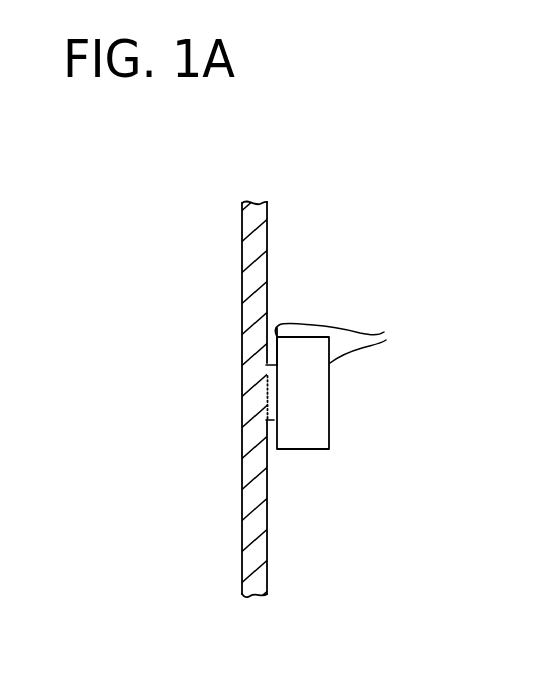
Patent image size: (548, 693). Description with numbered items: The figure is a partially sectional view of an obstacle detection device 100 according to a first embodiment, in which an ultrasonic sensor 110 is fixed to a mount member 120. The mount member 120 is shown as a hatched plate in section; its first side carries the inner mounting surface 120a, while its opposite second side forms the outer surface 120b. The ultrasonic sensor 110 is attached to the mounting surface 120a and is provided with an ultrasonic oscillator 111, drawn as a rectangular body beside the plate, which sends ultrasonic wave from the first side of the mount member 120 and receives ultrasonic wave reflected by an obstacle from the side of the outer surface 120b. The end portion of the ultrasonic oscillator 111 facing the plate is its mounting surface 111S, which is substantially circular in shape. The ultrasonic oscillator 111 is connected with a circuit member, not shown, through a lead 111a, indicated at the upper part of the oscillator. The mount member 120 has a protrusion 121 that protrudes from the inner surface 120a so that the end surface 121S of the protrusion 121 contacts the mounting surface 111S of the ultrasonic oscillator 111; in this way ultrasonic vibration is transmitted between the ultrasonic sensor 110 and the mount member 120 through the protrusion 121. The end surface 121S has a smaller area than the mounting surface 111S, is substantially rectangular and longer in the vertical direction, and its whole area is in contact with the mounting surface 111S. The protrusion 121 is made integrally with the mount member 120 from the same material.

The obstacle detection device 100 is at (383, 232).
The ultrasonic sensor 110 is at (343, 444).
The ultrasonic oscillator 111 is at (315, 418).
The mounting surface 111S is at (276, 352).
The lead 111a is at (387, 318).
The mount member 120 is at (228, 240).
The mounting surface 120a is at (267, 270).
The outer surface 120b is at (241, 287).
The protrusion 121 is at (272, 421).
The end surface 121S is at (277, 400).